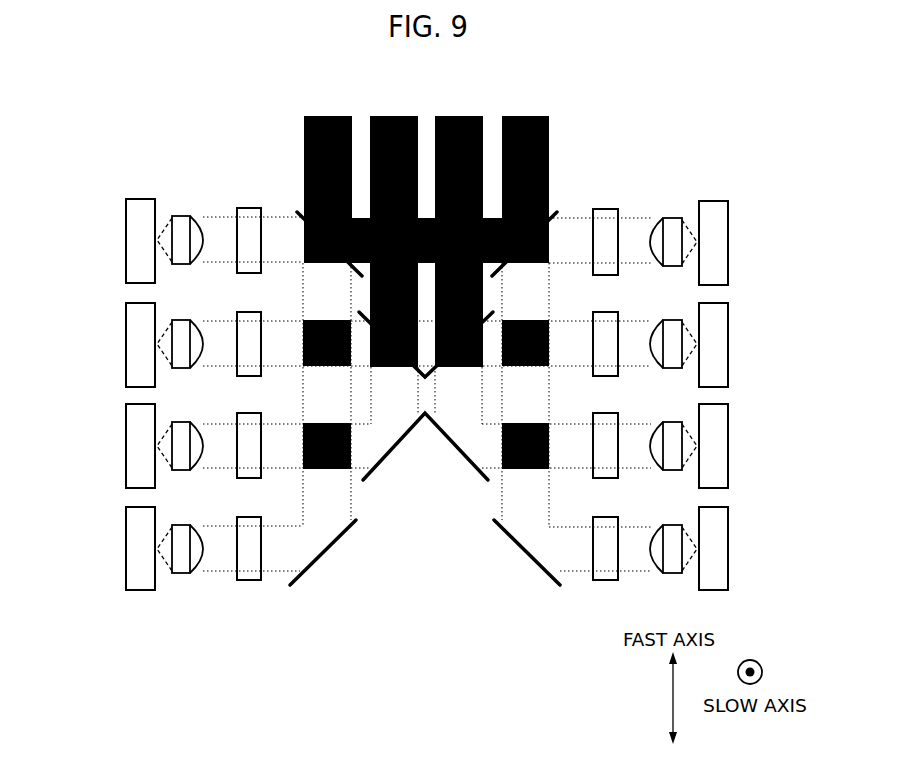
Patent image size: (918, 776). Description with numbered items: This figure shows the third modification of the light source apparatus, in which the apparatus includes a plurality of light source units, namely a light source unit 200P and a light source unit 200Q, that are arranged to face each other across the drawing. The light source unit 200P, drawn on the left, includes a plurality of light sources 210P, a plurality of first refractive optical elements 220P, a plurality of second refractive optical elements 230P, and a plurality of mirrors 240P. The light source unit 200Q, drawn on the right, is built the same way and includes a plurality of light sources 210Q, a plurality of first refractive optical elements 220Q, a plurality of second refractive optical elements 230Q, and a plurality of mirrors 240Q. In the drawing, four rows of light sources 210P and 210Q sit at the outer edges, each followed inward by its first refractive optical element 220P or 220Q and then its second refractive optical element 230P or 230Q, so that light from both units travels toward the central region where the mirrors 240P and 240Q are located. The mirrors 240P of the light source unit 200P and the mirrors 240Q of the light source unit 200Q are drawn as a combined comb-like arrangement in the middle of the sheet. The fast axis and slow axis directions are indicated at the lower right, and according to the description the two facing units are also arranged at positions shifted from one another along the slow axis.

The light source unit 200P is at (161, 344).
The light source unit 200Q is at (692, 345).
The light sources 210P is at (135, 237).
The light sources 210Q is at (717, 237).
The first refractive optical elements 220P is at (183, 216).
The first refractive optical elements 220Q is at (672, 218).
The second refractive optical elements 230P is at (253, 208).
The second refractive optical elements 230Q is at (603, 209).
The mirrors 240P is at (332, 116).
The mirrors 240Q is at (533, 116).